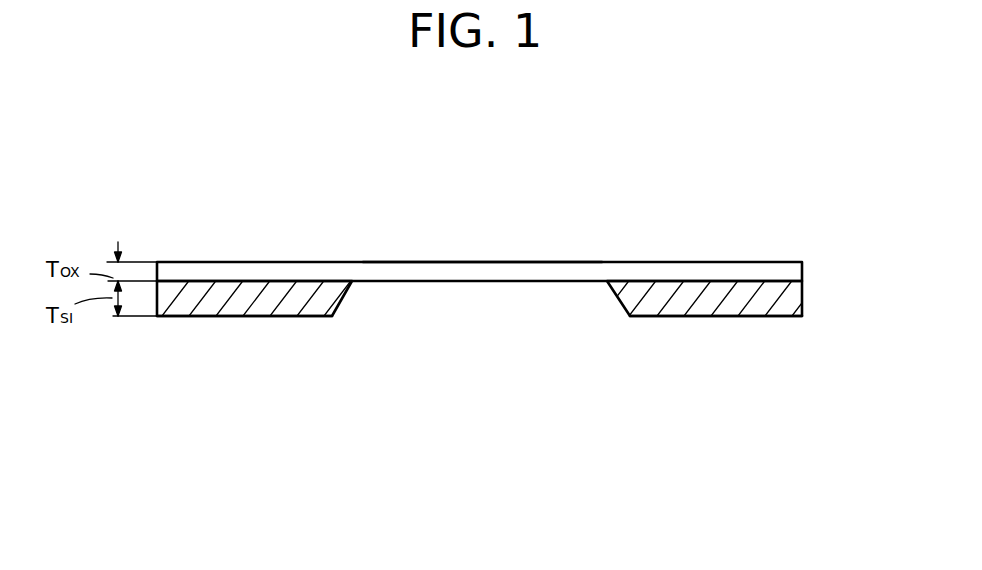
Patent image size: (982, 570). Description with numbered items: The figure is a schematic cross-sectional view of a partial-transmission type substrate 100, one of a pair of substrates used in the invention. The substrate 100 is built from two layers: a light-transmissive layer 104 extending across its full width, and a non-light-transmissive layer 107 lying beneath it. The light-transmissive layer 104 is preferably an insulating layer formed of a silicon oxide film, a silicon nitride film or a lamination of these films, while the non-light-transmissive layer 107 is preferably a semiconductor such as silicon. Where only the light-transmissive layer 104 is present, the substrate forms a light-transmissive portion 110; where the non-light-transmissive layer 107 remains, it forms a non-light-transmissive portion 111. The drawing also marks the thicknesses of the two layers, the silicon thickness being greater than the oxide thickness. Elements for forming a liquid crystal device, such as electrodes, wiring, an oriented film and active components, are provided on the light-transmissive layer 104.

The partial-transmission type substrate 100 is at (518, 248).
The light-transmissive layer 104 is at (792, 270).
The non-light-transmissive layer 107 is at (792, 298).
The light-transmissive portion 110 is at (602, 248).
The non-light-transmissive portion 111 is at (355, 337).